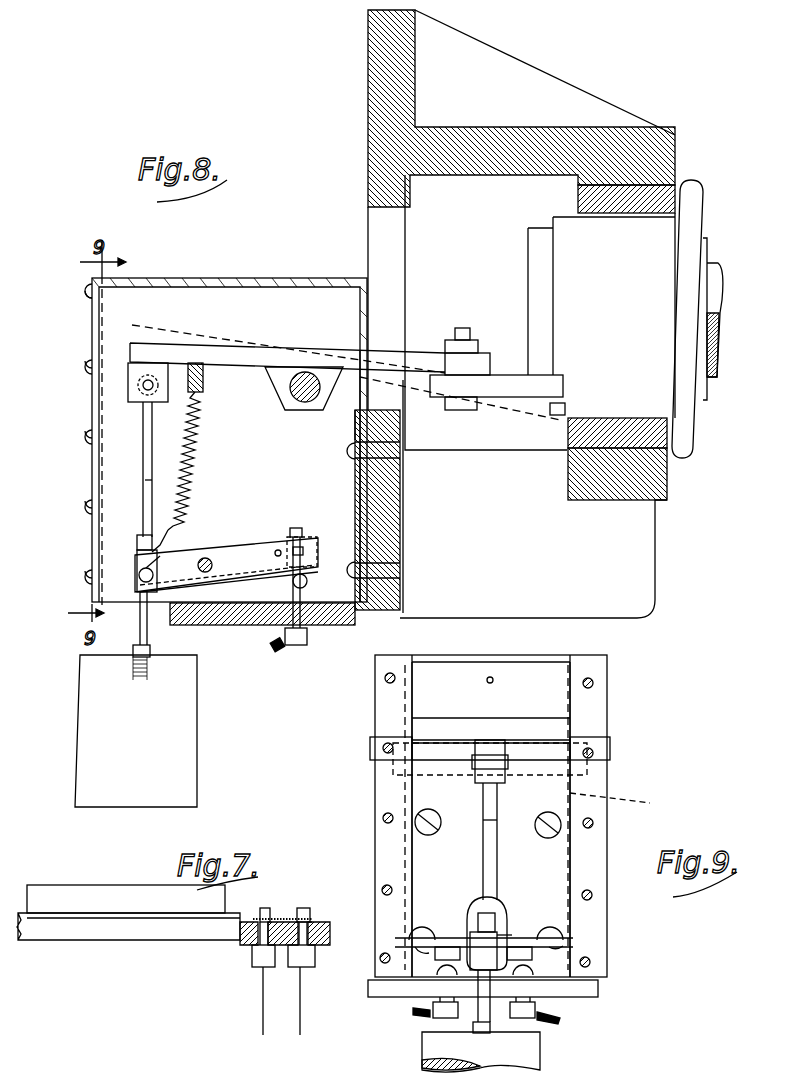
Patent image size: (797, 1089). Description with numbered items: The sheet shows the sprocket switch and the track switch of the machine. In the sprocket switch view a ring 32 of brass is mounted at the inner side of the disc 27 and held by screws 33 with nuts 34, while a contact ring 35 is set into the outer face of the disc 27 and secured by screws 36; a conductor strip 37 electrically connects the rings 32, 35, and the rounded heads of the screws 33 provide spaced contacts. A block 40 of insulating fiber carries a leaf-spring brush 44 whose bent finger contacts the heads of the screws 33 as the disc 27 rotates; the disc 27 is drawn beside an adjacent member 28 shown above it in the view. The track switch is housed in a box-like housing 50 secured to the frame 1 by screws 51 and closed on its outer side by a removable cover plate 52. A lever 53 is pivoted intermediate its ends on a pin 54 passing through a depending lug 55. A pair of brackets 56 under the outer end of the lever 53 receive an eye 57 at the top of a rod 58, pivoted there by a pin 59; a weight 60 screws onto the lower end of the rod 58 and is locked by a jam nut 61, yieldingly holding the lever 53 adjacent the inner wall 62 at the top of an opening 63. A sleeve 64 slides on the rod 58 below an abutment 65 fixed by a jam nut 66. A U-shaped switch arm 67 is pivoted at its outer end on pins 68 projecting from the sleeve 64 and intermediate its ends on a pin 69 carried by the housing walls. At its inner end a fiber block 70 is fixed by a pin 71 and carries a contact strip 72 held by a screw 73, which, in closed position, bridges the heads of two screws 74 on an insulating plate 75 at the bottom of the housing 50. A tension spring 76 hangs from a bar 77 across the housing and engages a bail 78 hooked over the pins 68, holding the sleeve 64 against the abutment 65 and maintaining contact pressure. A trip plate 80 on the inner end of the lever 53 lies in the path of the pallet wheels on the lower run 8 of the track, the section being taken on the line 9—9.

In FIG. 8, the frame 1 is at (360, 149).
In FIG. 8, the lower run of the track 8 is at (642, 417).
In FIG. 8, the section line 9— 9 is at (657, 398).
In FIG. 7, the disc 27 is at (168, 937).
In FIG. 7, the block 28 is at (110, 897).
In FIG. 7, the ring 32 is at (320, 925).
In FIG. 7, the screws 33 is at (300, 912).
In FIG. 7, the nuts 34 is at (308, 918).
In FIG. 7, the contact ring 35 is at (257, 947).
In FIG. 7, the screws 36 is at (263, 910).
In FIG. 7, the conductor strip 37 is at (268, 918).
In FIG. 7, the block 40 is at (254, 975).
In FIG. 7, the brush 44 is at (316, 971).
In FIG. 8, the housing 50 is at (230, 280).
In FIG. 9, the housing 50 is at (567, 653).
In FIG. 8, the screws 51 is at (348, 452).
In FIG. 9, the screws 51 is at (425, 832).
In FIG. 8, the cover plate 52 is at (92, 465).
In FIG. 8, the lever 53 is at (267, 340).
In FIG. 9, the lever 53 is at (543, 727).
In FIG. 8, the pin 54 is at (301, 404).
In FIG. 9, the pin 54 is at (585, 775).
In FIG. 8, the lug 55 is at (282, 402).
In FIG. 9, the lug 55 is at (623, 803).
In FIG. 8, the brackets 56 is at (128, 400).
In FIG. 9, the brackets 56 is at (467, 740).
In FIG. 8, the eye 57 is at (133, 405).
In FIG. 9, the eye 57 is at (485, 786).
In FIG. 8, the rod 58 is at (144, 483).
In FIG. 9, the rod 58 is at (498, 822).
In FIG. 8, the pin 59 is at (140, 384).
In FIG. 9, the pin 59 is at (500, 766).
In FIG. 8, the weight 60 is at (187, 710).
In FIG. 9, the weight 60 is at (422, 1057).
In FIG. 8, the jam nut 61 is at (151, 652).
In FIG. 9, the jam nut 61 is at (490, 1033).
In FIG. 8, the inner wall 62 is at (365, 318).
In FIG. 9, the inner wall 62 is at (545, 857).
In FIG. 8, the opening 63 is at (358, 397).
In FIG. 8, the sleeve 64 is at (138, 578).
In FIG. 9, the sleeve 64 is at (515, 935).
In FIG. 8, the abutment 65 is at (140, 560).
In FIG. 8, the jam nut 66 is at (145, 540).
In FIG. 8, the switch arm 67 is at (252, 535).
In FIG. 9, the switch arm 67 is at (465, 930).
In FIG. 8, the pins 68 is at (157, 556).
In FIG. 9, the pins 68 is at (520, 958).
In FIG. 8, the pin 69 is at (206, 555).
In FIG. 9, the pin 69 is at (450, 945).
In FIG. 8, the block 70 is at (285, 582).
In FIG. 8, the pin 71 is at (278, 549).
In FIG. 8, the contact strip 72 is at (307, 585).
In FIG. 8, the screw 73 is at (298, 528).
In FIG. 8, the screws 74 is at (273, 620).
In FIG. 9, the screws 74 is at (440, 982).
In FIG. 8, the plate 75 is at (327, 627).
In FIG. 9, the plate 75 is at (598, 995).
In FIG. 8, the tension spring 76 is at (180, 490).
In FIG. 8, the bar 77 is at (204, 386).
In FIG. 9, the bar 77 is at (423, 777).
In FIG. 8, the bail 78 is at (165, 527).
In FIG. 9, the bail 78 is at (477, 900).
In FIG. 8, the trip plate 80 is at (505, 380).